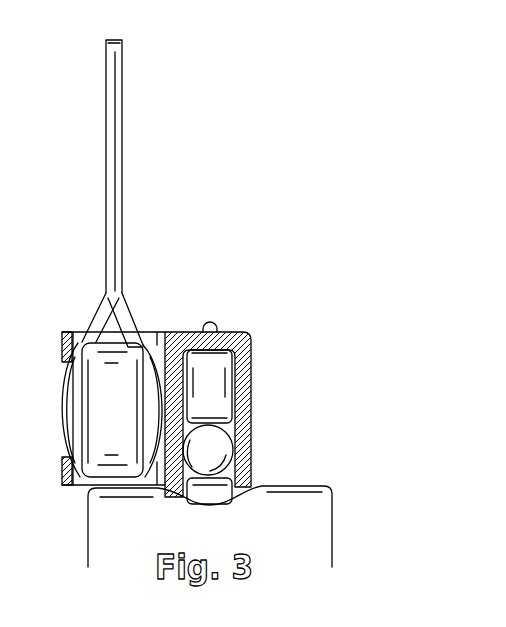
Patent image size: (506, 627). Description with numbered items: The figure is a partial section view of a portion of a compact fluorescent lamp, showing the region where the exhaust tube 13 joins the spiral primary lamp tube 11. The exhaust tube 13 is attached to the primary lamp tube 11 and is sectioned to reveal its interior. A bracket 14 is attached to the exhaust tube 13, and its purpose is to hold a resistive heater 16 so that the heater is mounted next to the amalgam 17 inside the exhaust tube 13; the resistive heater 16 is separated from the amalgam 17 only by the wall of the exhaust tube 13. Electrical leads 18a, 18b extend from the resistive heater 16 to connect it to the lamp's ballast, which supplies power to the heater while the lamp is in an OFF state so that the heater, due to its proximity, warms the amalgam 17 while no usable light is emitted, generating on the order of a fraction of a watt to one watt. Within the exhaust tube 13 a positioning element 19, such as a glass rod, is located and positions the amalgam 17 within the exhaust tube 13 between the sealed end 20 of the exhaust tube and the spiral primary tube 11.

The spiral primary lamp tube 11 is at (334, 512).
The exhaust tube 13 is at (251, 410).
The bracket 14 is at (63, 347).
The resistive heater 16 is at (61, 402).
The amalgam 17 is at (240, 471).
The electrical lead 18a is at (103, 319).
The electrical lead 18b is at (125, 316).
The positioning element 19 is at (233, 382).
The sealed end 20 is at (219, 331).